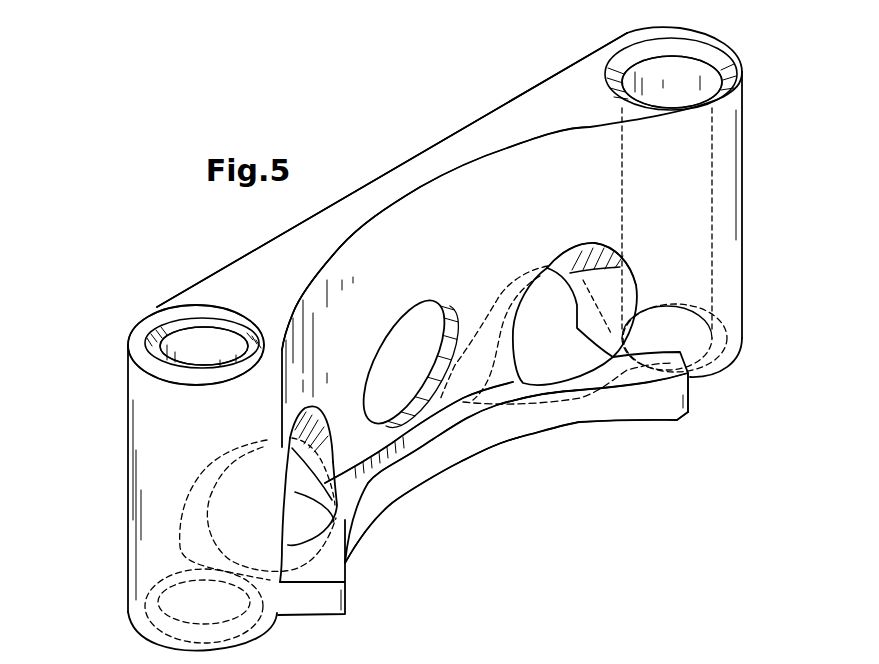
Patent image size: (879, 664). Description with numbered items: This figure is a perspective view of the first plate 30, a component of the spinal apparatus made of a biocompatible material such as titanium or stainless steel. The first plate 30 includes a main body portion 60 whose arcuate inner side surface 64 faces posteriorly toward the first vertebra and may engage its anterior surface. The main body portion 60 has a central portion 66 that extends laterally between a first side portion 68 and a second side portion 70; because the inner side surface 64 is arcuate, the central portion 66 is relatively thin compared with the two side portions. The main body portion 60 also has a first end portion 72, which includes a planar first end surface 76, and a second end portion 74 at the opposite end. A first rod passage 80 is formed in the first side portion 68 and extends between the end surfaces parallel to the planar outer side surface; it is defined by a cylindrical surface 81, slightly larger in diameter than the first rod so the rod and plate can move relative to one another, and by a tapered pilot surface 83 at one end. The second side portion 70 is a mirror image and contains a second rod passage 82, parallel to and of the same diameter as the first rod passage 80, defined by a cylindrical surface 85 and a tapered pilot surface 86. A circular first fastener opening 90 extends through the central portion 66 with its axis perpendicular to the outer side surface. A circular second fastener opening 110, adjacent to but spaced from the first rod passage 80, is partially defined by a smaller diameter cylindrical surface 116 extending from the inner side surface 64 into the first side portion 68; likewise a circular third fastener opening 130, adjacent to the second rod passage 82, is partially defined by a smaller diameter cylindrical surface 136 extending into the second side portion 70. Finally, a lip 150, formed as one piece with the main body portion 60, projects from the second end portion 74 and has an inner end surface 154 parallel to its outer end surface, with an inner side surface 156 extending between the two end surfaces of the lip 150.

The first plate 30 is at (330, 145).
The main body portion 60 is at (437, 103).
The inner side surface 64 is at (497, 177).
The central portion 66 is at (403, 152).
The first side portion 68 is at (105, 495).
The second side portion 70 is at (760, 233).
The first end portion 72 is at (228, 245).
The second end portion 74 is at (410, 511).
The first end surface 76 is at (297, 252).
The first rod passage 80 is at (202, 350).
The cylindrical surface 81 is at (223, 342).
The second rod passage 82 is at (674, 82).
The tapered pilot surface 83 is at (133, 342).
The cylindrical surface 85 is at (640, 82).
The tapered pilot surface 86 is at (686, 48).
The first fastener opening 90 is at (420, 290).
The second fastener opening 110 is at (282, 427).
The cylindrical surface 116 is at (328, 412).
The third fastener opening 130 is at (566, 244).
The cylindrical surface 136 is at (603, 267).
The lip 150 is at (445, 475).
The inner end surface 154 is at (437, 418).
The inner side surface 156 is at (618, 406).